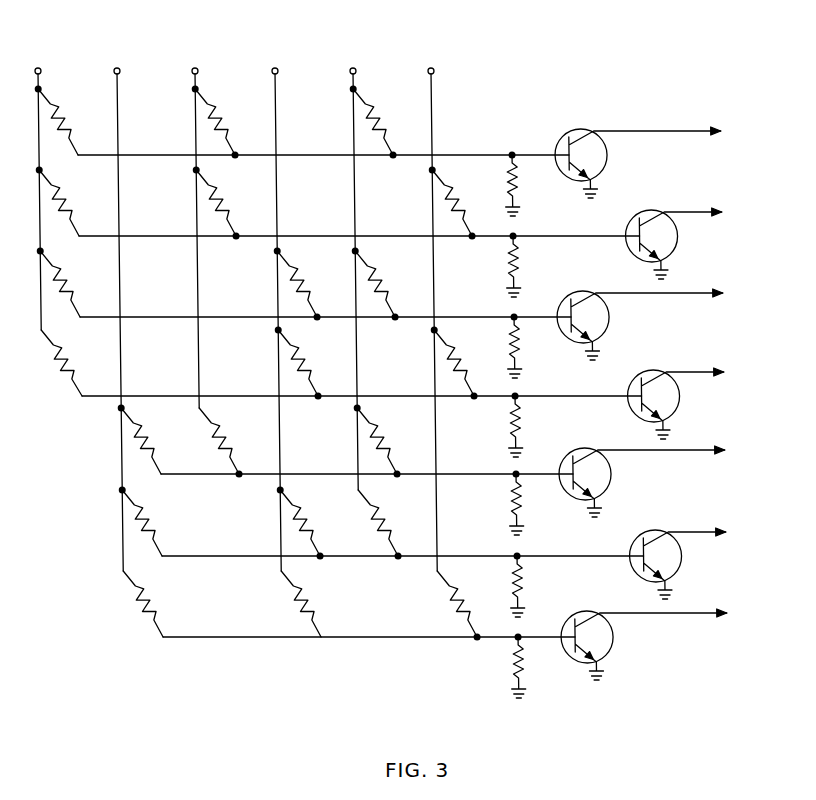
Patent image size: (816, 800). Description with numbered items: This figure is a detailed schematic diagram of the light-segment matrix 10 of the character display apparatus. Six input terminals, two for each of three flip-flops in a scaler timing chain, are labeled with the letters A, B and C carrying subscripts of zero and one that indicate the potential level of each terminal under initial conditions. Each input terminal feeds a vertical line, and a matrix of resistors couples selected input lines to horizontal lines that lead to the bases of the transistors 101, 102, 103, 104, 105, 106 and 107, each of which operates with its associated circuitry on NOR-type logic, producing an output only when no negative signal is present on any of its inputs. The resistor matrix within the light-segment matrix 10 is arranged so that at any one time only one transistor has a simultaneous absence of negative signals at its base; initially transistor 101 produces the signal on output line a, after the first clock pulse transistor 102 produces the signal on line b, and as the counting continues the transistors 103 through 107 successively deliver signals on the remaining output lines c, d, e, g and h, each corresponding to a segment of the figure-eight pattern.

The light-segment matrix 10 is at (434, 700).
The transistor 101 is at (574, 130).
The transistor 102 is at (644, 211).
The transistor 103 is at (574, 292).
The transistor 104 is at (644, 371).
The transistor 105 is at (574, 449).
The transistor 106 is at (644, 531).
The transistor 107 is at (574, 612).